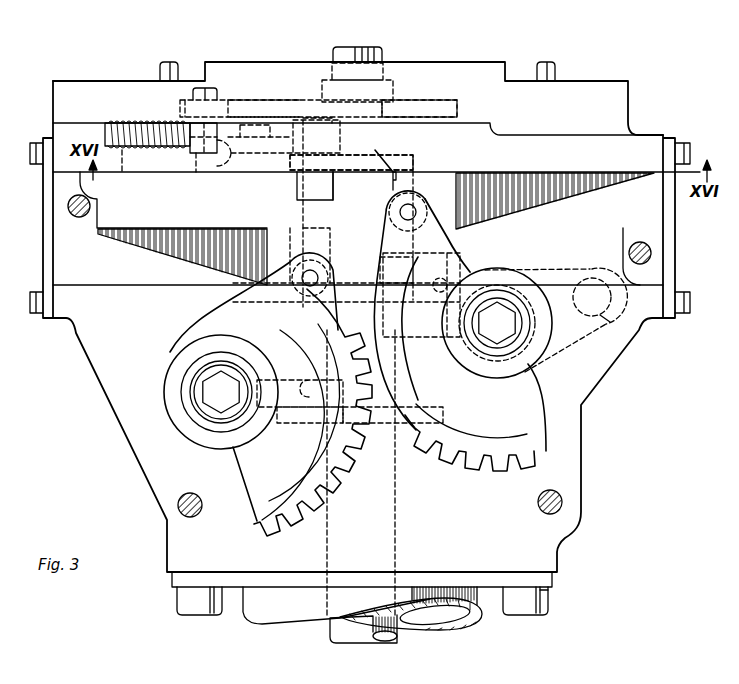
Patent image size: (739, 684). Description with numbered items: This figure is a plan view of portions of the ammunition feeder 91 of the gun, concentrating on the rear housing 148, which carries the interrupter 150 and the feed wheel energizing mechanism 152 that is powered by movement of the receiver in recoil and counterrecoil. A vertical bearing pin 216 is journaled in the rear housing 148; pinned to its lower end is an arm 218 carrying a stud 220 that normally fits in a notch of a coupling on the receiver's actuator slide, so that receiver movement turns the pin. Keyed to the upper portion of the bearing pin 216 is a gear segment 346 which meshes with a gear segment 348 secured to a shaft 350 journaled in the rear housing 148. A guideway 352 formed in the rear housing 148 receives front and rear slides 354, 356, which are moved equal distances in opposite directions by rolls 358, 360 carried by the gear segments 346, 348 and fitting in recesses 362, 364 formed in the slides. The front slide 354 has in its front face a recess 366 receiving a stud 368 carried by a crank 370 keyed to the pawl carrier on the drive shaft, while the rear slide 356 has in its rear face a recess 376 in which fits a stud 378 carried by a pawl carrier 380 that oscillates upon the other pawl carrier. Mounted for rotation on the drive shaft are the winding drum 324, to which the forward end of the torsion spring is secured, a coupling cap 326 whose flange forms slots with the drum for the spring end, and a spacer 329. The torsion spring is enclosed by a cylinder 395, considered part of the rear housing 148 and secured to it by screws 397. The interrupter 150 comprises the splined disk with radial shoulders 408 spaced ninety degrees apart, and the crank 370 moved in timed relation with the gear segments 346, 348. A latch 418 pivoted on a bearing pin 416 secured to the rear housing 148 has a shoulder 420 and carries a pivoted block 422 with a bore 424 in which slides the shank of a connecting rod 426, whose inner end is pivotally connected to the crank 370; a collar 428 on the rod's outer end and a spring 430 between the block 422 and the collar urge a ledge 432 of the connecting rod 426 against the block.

The feeder 91 is at (80, 394).
The rear housing 148 is at (582, 458).
The interrupter 150 is at (303, 70).
The feed wheel energizing mechanism 152 is at (426, 465).
The bearing pin 216 is at (494, 292).
The arm 218 is at (560, 272).
The stud 220 is at (614, 320).
The winding drum 324 is at (240, 322).
The coupling cap 326 is at (292, 432).
The spacer 329 is at (372, 641).
The gear segment 346 is at (528, 400).
The gear segment 348 is at (236, 478).
The shaft 350 is at (190, 388).
The guideway 352 is at (586, 172).
The front slide 354 is at (140, 173).
The rear slide 356 is at (548, 226).
The roll 358 is at (450, 175).
The roll 360 is at (288, 250).
The recess 362 is at (386, 160).
The recess 364 is at (330, 240).
The recess 366 is at (333, 198).
The stud 368 is at (333, 186).
The crank 370 is at (410, 160).
The recess 376 is at (439, 284).
The stud 378 is at (372, 272).
The pawl carrier 380 is at (441, 298).
The cylinder 395 is at (263, 615).
The screws 397 is at (552, 600).
The radial shoulders 408 is at (398, 98).
The bearing pin 416 is at (166, 62).
The latch 418 is at (238, 100).
The shoulder 420 is at (282, 100).
The block 422 is at (188, 158).
The bore 424 is at (226, 160).
The connecting rod 426 is at (262, 162).
The collar 428 is at (122, 172).
The spring 430 is at (152, 118).
The ledge 432 is at (196, 175).